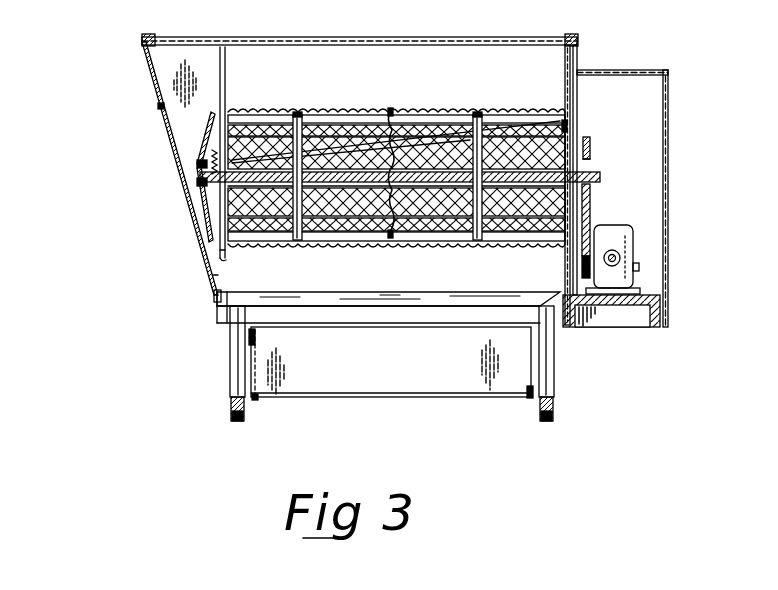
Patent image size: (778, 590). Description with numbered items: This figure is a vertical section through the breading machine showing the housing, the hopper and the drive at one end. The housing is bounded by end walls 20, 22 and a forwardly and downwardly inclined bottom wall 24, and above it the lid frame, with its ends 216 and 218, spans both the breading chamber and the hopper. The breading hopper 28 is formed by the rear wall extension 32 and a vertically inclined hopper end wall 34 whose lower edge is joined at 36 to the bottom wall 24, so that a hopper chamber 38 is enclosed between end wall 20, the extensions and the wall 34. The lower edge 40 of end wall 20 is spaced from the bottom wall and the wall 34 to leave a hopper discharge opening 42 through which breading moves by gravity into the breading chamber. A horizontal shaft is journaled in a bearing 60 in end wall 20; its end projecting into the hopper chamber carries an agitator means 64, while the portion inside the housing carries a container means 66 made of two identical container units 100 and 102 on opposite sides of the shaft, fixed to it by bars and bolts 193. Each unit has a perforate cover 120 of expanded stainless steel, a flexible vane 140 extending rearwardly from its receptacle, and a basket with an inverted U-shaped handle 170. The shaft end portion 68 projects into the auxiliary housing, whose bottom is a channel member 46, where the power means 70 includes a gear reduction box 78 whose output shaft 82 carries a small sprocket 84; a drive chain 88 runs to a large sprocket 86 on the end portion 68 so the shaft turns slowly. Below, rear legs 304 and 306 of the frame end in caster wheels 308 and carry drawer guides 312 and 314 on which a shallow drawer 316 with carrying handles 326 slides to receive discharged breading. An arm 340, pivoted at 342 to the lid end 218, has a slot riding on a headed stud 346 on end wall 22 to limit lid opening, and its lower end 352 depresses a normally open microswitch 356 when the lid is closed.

The end wall 20 is at (226, 80).
The end wall 22 is at (565, 102).
The bottom wall 24 is at (410, 292).
The breading hopper 28 is at (161, 107).
The extension 32 is at (205, 60).
The hopper end wall 34 is at (169, 135).
The juncture 36 is at (216, 300).
The hopper chamber 38 is at (165, 68).
The lower edge 40 is at (224, 258).
The hopper discharge opening 42 is at (221, 272).
The channel member 46 is at (667, 308).
The bearing 60 is at (198, 150).
The agitator means 64 is at (194, 200).
The container means 66 is at (419, 100).
The end portion 68 is at (601, 178).
The power means 70 is at (656, 240).
The gear reduction box 78 is at (626, 248).
The output shaft 82 is at (592, 265).
The small sprocket 84 is at (592, 262).
The large sprocket 86 is at (590, 205).
The drive chain 88 is at (590, 250).
The container unit 100 is at (485, 252).
The container unit 102 is at (391, 110).
The perforate cover 120 is at (348, 110).
The vane 140 is at (272, 140).
The handle 170 is at (300, 113).
The bolts 193 is at (396, 214).
The end 216 is at (147, 34).
The end 218 is at (571, 36).
The rear leg 304 is at (231, 348).
The rear leg 306 is at (555, 347).
The caster wheels 308 is at (231, 414).
The drawer support member 312 is at (258, 400).
The guide 314 is at (532, 400).
The drawer 316 is at (429, 410).
The carrying handles 326 is at (256, 340).
The arm 340 is at (577, 56).
The pivot 342 is at (578, 44).
The headed stud 346 is at (580, 76).
The lower end 352 is at (594, 150).
The microswitch 356 is at (592, 161).